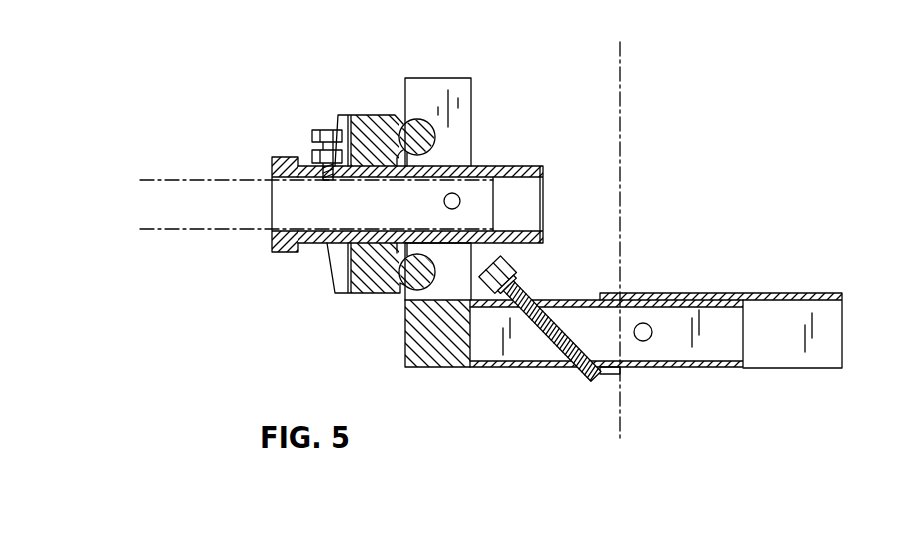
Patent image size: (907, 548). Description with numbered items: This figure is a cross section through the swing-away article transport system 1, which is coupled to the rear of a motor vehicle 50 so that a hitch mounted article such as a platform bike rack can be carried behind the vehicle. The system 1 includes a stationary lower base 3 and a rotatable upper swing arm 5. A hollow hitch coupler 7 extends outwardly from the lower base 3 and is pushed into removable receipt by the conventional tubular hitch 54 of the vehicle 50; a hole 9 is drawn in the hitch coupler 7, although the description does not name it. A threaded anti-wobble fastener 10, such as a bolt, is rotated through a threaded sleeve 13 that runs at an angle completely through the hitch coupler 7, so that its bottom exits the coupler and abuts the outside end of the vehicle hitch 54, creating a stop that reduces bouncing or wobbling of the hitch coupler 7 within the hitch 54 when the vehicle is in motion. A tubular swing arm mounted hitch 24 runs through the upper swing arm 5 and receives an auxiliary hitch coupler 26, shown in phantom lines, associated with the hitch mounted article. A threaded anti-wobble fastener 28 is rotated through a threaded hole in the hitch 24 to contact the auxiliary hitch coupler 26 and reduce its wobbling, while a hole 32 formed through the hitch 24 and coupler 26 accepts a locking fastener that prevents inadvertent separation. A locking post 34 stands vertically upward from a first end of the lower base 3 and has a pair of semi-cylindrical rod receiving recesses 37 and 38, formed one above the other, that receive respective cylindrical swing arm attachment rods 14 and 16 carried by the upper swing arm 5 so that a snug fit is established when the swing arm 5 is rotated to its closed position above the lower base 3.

The swing-away article transport system 1 is at (310, 293).
The stationary lower base 3 is at (403, 347).
The rotatable upper swing arm 5 is at (368, 113).
The hollow hitch coupler 7 is at (493, 368).
The hole 9 is at (648, 341).
The threaded anti-wobble fastener 10 is at (557, 363).
The threaded sleeve 13 is at (514, 292).
The cylindrical swing arm attachment rod 14 is at (424, 121).
The cylindrical swing arm attachment rod 16 is at (406, 286).
The tubular swing arm mounted hitch 24 is at (513, 166).
The auxiliary hitch coupler 26 is at (178, 232).
The threaded anti-wobble fastener 28 is at (314, 131).
The hole 32 is at (461, 201).
The locking post 34 is at (458, 141).
The semi-cylindrical rod receiving recess 37 is at (420, 133).
The semi-cylindrical rod receiving recess 38 is at (432, 287).
The motor vehicle 50 is at (621, 146).
The tubular hitch 54 is at (791, 293).